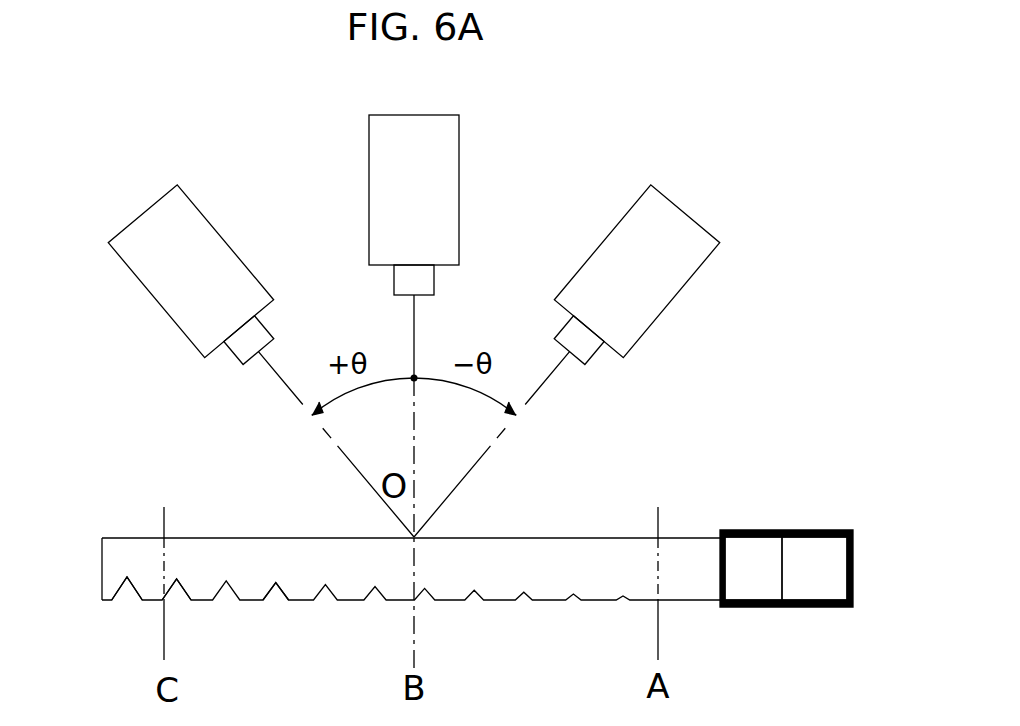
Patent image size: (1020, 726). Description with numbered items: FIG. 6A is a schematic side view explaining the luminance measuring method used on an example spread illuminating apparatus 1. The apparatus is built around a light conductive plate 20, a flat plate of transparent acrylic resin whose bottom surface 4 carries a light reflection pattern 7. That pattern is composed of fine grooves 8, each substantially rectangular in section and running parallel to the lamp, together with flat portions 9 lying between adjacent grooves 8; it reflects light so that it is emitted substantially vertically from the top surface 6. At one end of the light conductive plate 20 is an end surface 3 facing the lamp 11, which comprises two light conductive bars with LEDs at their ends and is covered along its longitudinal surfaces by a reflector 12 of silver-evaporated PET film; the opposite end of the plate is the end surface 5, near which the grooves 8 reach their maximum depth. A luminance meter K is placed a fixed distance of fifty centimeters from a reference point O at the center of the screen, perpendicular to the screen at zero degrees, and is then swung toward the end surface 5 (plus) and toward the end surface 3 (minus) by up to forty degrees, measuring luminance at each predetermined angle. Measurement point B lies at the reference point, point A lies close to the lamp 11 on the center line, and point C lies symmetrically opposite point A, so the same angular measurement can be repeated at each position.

The luminance meter K is at (437, 162).
The spread illuminating apparatus 1 is at (461, 536).
The light conductive plate 20 is at (392, 569).
The top surface 6 is at (500, 538).
The end surface 5 is at (102, 560).
The bottom surface 4 is at (503, 602).
The light reflection pattern 7 is at (297, 615).
The grooves 8 is at (177, 596).
The flat portions 9 is at (150, 601).
The end surface 3 is at (789, 552).
The lamp 11 is at (790, 563).
The reflector 12 is at (812, 538).